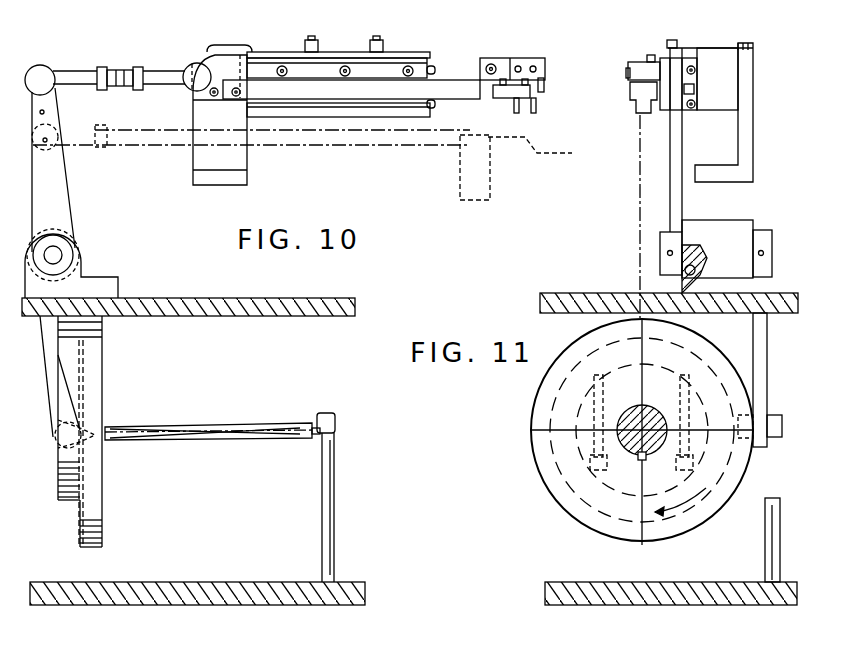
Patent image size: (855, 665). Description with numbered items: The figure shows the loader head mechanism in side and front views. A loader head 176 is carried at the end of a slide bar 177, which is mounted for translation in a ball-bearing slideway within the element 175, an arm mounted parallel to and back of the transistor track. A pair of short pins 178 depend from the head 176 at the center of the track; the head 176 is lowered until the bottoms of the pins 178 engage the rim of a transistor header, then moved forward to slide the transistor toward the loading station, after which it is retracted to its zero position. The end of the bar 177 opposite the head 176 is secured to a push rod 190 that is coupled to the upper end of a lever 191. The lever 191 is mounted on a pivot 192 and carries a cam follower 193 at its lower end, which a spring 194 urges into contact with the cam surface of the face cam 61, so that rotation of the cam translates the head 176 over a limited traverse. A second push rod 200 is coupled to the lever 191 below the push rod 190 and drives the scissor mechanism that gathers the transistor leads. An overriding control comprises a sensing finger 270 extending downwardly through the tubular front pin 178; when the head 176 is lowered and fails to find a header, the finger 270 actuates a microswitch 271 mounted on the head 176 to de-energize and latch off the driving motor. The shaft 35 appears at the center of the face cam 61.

In FIG. 11, the drive shaft 35 is at (634, 409).
In FIG. 10, the face cam 61 is at (104, 532).
In FIG. 11, the face cam 61 is at (701, 526).
In FIG. 10, the element (arm) 175 is at (360, 117).
In FIG. 11, the element (arm) 175 is at (718, 50).
In FIG. 10, the loader head 176 is at (520, 95).
In FIG. 11, the loader head 176 is at (627, 90).
In FIG. 10, the slide bar 177 is at (462, 78).
In FIG. 10, the pins 178 is at (533, 107).
In FIG. 10, the push rod 190 is at (122, 88).
In FIG. 10, the lever 191 is at (67, 183).
In FIG. 11, the lever 191 is at (683, 132).
In FIG. 10, the pivot 192 is at (60, 255).
In FIG. 11, the pivot 192 is at (660, 247).
In FIG. 10, the cam follower 193 is at (60, 442).
In FIG. 10, the spring 194 is at (205, 441).
In FIG. 10, the push rod 200 is at (282, 140).
In FIG. 11, the sensing finger 270 is at (637, 114).
In FIG. 10, the microswitch 271 is at (513, 57).
In FIG. 11, the microswitch 271 is at (637, 61).